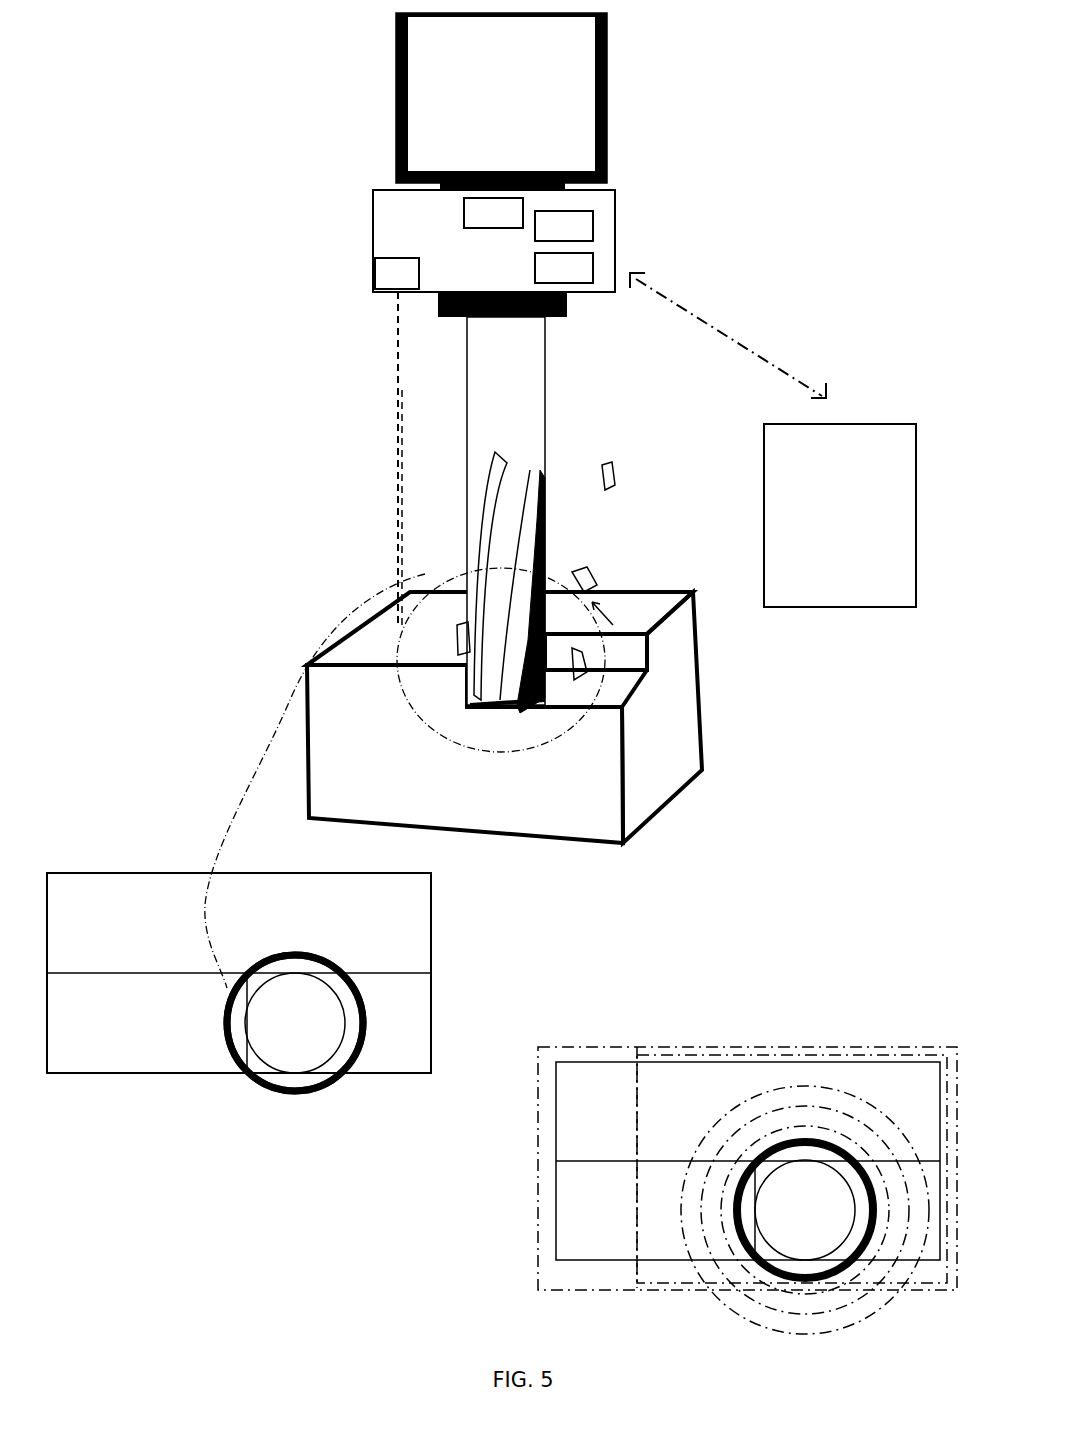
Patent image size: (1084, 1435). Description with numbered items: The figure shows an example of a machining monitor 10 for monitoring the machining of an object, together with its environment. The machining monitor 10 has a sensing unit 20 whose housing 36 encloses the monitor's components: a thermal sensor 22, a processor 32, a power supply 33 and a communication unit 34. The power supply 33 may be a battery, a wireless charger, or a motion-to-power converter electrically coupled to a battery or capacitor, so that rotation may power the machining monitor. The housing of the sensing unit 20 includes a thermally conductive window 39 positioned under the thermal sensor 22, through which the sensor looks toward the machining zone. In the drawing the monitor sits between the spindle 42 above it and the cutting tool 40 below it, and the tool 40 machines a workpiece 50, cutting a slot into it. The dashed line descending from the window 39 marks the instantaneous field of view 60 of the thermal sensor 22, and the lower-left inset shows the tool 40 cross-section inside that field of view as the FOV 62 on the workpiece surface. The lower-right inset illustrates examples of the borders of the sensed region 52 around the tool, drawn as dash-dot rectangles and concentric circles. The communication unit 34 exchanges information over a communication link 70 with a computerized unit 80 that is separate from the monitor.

The machining monitor 10 is at (631, 223).
The sensing unit 20 is at (494, 241).
The thermal sensor 22 is at (397, 273).
The processor 32 is at (493, 213).
The power supply 33 is at (564, 226).
The communication unit 34 is at (564, 268).
The housing 36 is at (616, 190).
The thermally conductive window 39 is at (397, 293).
The cutting tool 40 is at (386, 704).
The spindle 42 is at (501, 101).
The workpiece 50 is at (504, 717).
The sensed region 52 is at (890, 1047).
The instantaneous field of view 60 is at (397, 477).
The field of view 62 is at (307, 1093).
The communication link 70 is at (733, 336).
The computerized unit 80 is at (840, 515).